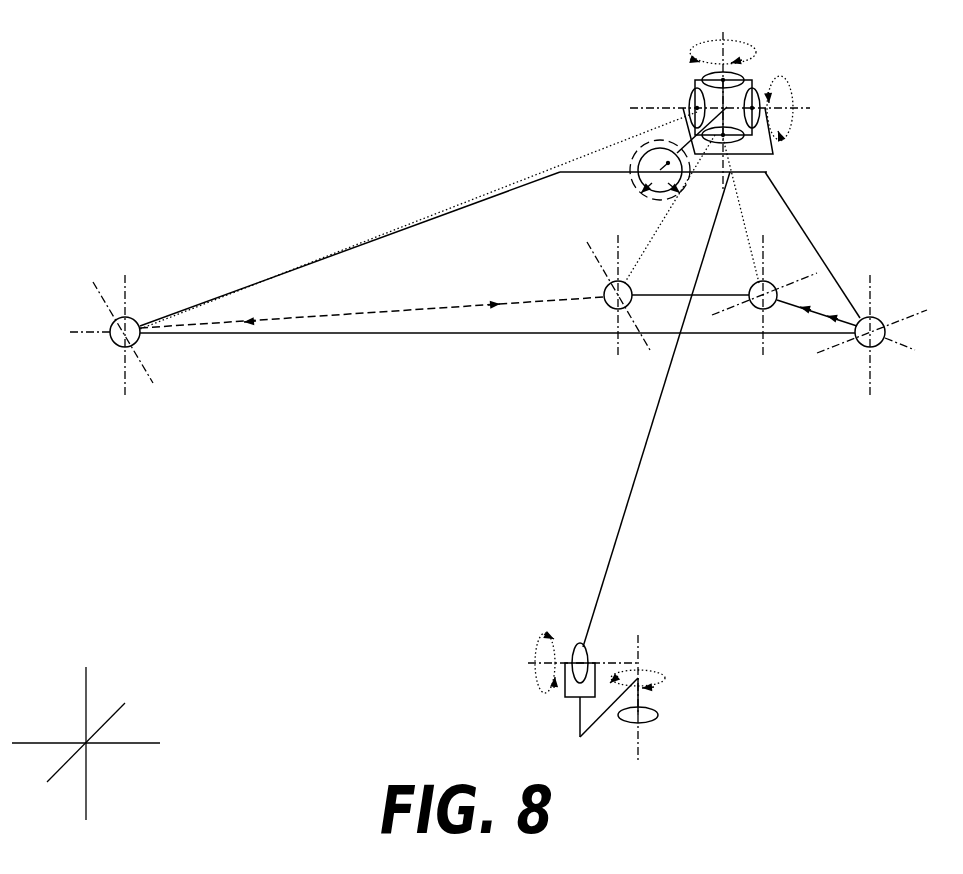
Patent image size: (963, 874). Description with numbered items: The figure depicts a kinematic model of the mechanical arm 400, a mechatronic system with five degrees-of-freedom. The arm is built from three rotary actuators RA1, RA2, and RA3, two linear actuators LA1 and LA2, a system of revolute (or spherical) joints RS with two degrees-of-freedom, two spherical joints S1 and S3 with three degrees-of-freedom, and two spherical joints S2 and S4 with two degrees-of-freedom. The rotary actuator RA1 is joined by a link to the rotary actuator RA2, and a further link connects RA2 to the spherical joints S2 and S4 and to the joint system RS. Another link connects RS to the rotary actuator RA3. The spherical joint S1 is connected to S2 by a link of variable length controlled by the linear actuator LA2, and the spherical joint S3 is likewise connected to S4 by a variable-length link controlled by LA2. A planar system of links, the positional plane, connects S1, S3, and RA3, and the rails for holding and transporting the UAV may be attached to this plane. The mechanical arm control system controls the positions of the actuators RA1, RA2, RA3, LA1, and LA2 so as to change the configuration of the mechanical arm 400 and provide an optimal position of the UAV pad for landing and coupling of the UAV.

The mechanical arm 400 is at (202, 48).
The system of revolute joints RS is at (792, 130).
The rotary actuator RA3 is at (630, 178).
The spherical joint S3 is at (110, 342).
The spherical joint S4 is at (605, 283).
The spherical joint S2 is at (753, 285).
The spherical joint S1 is at (858, 343).
The linear actuator LA2 is at (417, 310).
The linear actuator LA1 is at (818, 306).
The rotary actuator RA2 is at (537, 643).
The rotary actuator RA1 is at (670, 672).